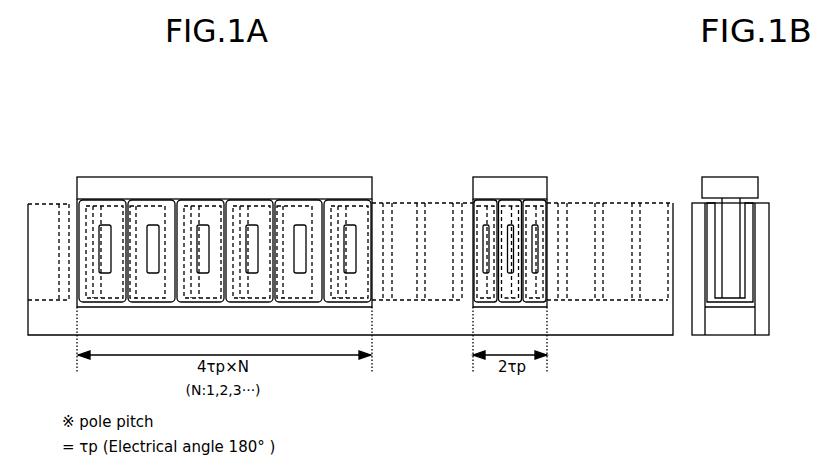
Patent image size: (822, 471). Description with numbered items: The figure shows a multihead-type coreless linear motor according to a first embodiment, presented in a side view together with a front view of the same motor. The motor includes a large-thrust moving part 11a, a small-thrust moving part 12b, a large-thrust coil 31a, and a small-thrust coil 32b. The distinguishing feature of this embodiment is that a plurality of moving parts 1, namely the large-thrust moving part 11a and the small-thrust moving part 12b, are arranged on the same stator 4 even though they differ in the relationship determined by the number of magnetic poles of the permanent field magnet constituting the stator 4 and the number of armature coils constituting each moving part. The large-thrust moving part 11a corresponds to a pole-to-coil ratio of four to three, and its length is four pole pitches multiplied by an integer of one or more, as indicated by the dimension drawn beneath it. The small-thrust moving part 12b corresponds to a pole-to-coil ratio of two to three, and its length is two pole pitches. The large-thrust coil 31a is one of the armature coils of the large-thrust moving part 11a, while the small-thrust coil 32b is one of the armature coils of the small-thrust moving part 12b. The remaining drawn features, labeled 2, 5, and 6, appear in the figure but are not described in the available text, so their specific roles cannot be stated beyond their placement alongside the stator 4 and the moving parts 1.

In FIG. 1B, the moving parts 1 is at (730, 203).
In FIG. 1B, the yoke plate 2 is at (713, 177).
In FIG. 1B, the stator 4 is at (695, 338).
In FIG. 1A, the field / stator base 5 is at (562, 327).
In FIG. 1A, the field pole (hidden) 6 is at (437, 218).
In FIG. 1A, the large-thrust moving part 11a is at (163, 177).
In FIG. 1A, the large-thrust coil 31a is at (193, 202).
In FIG. 1A, the small-thrust moving part 12b is at (480, 177).
In FIG. 1A, the small-thrust coil 32b is at (488, 202).